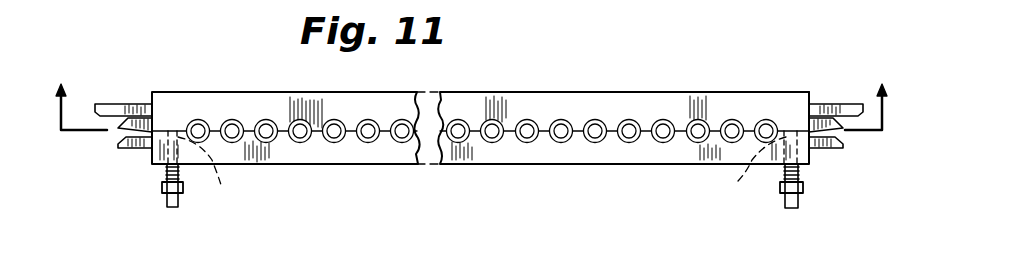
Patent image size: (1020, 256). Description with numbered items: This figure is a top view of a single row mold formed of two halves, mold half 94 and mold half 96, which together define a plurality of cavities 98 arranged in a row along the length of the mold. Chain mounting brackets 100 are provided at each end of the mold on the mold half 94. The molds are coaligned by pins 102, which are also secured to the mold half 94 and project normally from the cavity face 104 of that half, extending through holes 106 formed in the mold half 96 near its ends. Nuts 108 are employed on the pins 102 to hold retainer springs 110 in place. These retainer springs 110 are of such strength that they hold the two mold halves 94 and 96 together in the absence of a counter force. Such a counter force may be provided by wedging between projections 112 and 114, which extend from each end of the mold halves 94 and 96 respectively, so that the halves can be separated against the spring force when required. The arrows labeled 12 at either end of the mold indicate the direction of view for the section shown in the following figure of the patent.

The section line for FIG. 12 is at (475, 92).
The mold half 94 is at (644, 92).
The mold half 96 is at (565, 164).
The cavities 98 is at (561, 120).
The chain mounting brackets 100 is at (118, 110).
The pins 102 is at (164, 206).
The cavity face 104 is at (792, 128).
The holes 106 is at (482, 170).
The nuts 108 is at (185, 192).
The retainer springs 110 is at (182, 172).
The projection 112 is at (122, 127).
The projection 114 is at (123, 149).